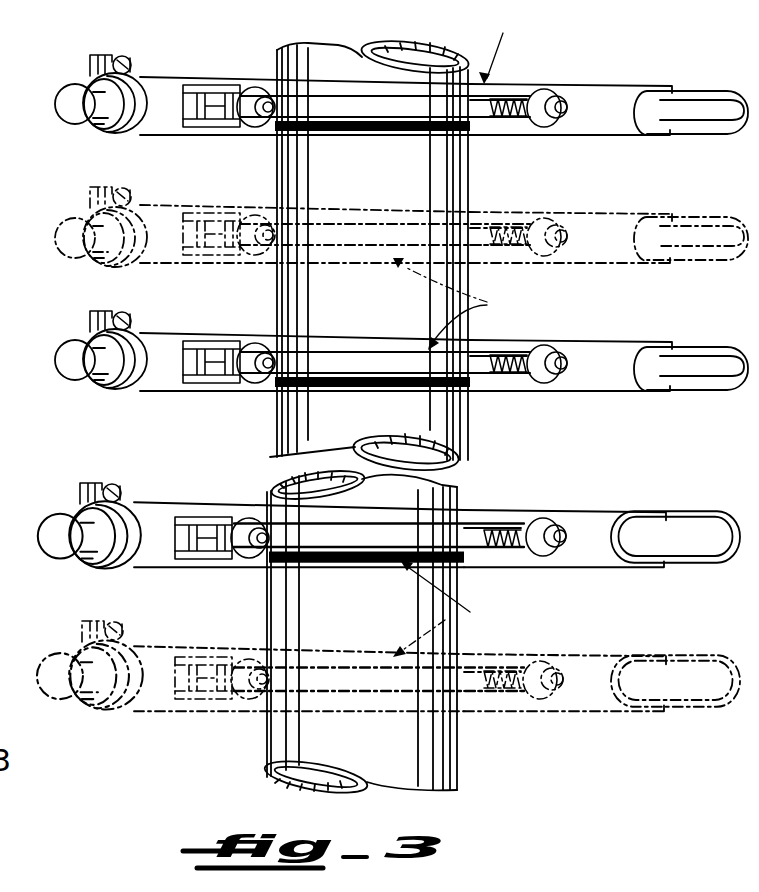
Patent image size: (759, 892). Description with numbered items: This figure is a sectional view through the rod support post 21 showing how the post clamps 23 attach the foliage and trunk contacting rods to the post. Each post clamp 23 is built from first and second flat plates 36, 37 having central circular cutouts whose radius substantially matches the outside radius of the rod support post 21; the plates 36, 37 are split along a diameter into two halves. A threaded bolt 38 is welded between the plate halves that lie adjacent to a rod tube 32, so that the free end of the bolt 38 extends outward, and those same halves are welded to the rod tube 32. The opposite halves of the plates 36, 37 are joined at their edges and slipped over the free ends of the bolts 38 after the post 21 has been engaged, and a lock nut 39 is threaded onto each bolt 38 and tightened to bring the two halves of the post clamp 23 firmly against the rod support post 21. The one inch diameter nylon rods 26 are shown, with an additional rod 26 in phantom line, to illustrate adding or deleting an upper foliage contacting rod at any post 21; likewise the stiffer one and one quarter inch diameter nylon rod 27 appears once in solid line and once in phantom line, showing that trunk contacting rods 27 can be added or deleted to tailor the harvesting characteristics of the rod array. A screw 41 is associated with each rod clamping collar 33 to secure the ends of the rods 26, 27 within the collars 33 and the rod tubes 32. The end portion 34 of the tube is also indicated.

The rod support post 21 is at (402, 45).
The post clamp 23 is at (467, 332).
The nylon rod 26 is at (694, 100).
The nylon rod 27 is at (707, 657).
The rod tube 32 is at (176, 78).
The rod clamping collar 33 is at (137, 122).
The bar end portion 34 is at (617, 134).
The first flat plate 36 is at (342, 96).
The second flat plate 37 is at (400, 120).
The threaded bolt 38 is at (262, 88).
The lock nut 39 is at (233, 130).
The screw 41 is at (130, 56).